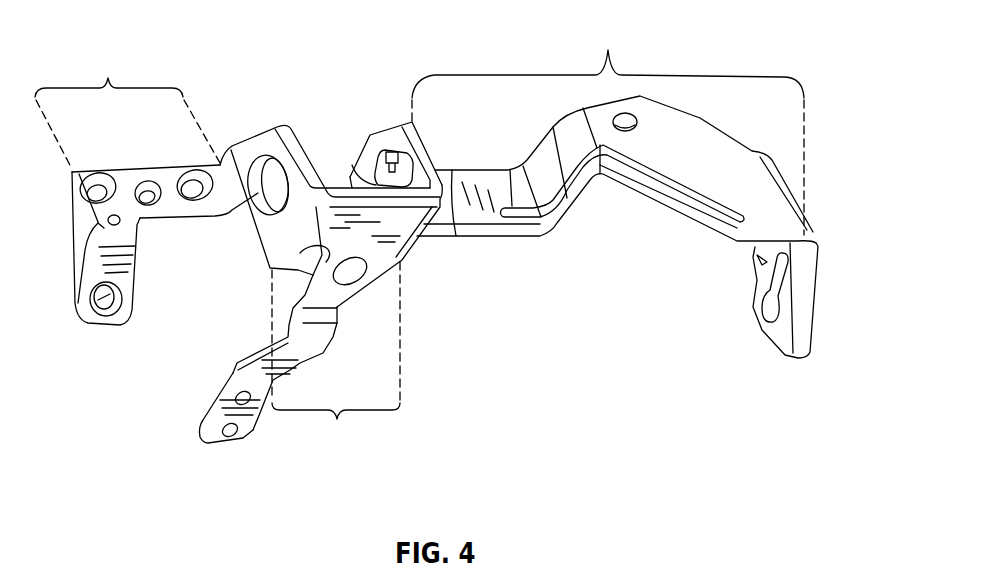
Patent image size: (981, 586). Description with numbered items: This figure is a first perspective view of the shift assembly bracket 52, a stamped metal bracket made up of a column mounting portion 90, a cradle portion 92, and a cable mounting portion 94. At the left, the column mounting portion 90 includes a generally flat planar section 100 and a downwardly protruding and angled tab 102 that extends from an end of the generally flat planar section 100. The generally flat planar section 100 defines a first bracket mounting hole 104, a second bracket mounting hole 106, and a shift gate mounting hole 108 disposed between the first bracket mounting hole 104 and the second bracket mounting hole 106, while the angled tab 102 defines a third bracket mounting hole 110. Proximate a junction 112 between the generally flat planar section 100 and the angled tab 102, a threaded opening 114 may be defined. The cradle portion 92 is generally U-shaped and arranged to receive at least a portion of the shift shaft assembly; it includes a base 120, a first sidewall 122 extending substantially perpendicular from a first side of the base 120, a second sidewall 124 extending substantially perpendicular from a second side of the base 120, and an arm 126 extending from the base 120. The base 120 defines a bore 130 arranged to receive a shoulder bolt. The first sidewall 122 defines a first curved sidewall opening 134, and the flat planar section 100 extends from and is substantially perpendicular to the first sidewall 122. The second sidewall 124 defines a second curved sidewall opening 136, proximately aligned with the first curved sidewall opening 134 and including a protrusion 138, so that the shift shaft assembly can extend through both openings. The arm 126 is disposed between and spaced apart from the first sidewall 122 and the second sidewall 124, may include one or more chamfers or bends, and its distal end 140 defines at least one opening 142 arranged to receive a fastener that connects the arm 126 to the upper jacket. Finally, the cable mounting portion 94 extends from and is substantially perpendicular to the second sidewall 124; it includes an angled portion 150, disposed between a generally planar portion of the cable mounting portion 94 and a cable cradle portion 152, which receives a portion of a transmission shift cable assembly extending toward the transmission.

The shift assembly bracket 52 is at (838, 132).
The column mounting portion 90 is at (127, 102).
The cradle portion 92 is at (336, 358).
The cable mounting portion 94 is at (614, 128).
The generally flat planar section 100 is at (197, 218).
The downwardly protruding and angled tab 102 is at (133, 296).
The first bracket mounting hole 104 is at (86, 176).
The second bracket mounting hole 106 is at (184, 175).
The shift gate mounting hole 108 is at (141, 183).
The third bracket mounting hole 110 is at (119, 300).
The junction 112 is at (138, 224).
The threaded opening 114 is at (98, 223).
The base 120 is at (402, 232).
The first sidewall 122 is at (290, 126).
The second sidewall 124 is at (413, 138).
The arm 126 is at (262, 412).
The bore 130 is at (356, 272).
The first curved sidewall opening 134 is at (277, 185).
The second curved sidewall opening 136 is at (396, 182).
The protrusion 138 is at (391, 152).
The distal end 140 is at (207, 443).
The opening 142 is at (232, 437).
The angled portion 150 is at (684, 124).
The cable cradle portion 152 is at (757, 340).